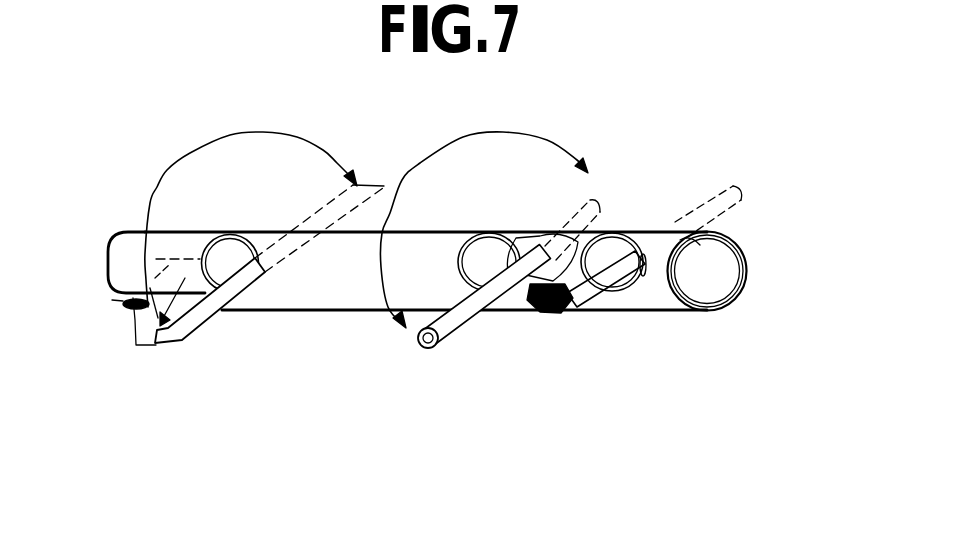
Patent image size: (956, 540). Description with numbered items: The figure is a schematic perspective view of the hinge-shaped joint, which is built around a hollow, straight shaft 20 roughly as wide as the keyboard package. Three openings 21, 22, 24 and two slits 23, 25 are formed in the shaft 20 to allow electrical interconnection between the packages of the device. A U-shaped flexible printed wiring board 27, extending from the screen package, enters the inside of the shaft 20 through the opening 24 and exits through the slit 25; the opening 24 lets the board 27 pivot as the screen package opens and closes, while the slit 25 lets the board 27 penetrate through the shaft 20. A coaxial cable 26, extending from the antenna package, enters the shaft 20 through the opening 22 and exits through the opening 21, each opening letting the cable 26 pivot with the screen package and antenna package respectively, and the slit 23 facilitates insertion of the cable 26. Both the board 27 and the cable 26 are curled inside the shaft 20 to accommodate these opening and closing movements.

The shaft 20 is at (747, 273).
The opening 21 is at (631, 228).
The opening 22 is at (493, 246).
The slit 23 is at (520, 313).
The opening 24 is at (242, 246).
The slit 25 is at (120, 303).
The coaxial cable 26 is at (450, 337).
The flexible printed wiring board 27 is at (220, 313).